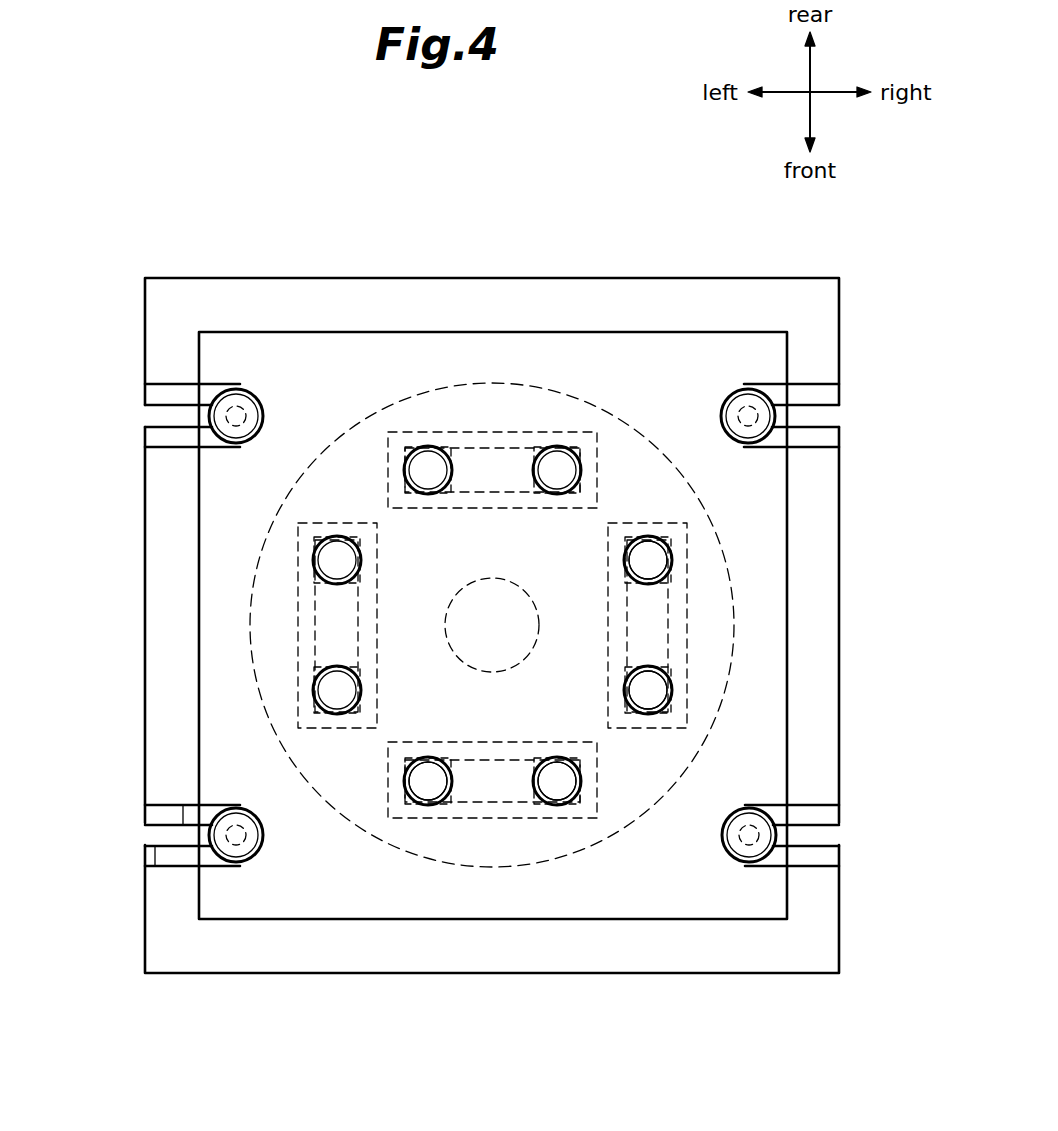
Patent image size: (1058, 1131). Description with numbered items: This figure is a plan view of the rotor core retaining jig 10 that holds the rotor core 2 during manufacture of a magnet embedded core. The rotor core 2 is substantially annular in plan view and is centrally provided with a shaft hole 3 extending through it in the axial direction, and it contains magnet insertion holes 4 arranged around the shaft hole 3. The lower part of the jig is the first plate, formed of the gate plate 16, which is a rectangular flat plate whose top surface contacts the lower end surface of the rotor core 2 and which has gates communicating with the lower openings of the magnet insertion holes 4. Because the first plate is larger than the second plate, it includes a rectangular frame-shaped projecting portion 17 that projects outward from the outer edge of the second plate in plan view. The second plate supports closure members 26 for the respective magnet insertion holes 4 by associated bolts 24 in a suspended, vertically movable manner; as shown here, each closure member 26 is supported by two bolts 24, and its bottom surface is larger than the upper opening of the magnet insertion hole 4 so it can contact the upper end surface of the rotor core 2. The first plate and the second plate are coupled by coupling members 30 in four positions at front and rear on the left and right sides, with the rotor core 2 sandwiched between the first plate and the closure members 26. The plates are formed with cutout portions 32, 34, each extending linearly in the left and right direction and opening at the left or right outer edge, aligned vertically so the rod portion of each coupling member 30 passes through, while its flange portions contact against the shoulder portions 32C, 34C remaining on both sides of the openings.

The rotor core 2 is at (687, 483).
The shaft hole 3 is at (455, 612).
The magnet insertion holes 4 is at (500, 448).
The rotor core retaining jig 10 is at (658, 257).
The gate plate 16 is at (826, 321).
The projecting portion 17 is at (825, 713).
The bolts 24 is at (640, 690).
The closure members 26 is at (485, 432).
The coupling members 30 is at (257, 409).
The cutout portions 32 is at (162, 417).
The shoulder portions 32C is at (183, 812).
The cutout portions 34 is at (228, 420).
The shoulder portions 34C is at (210, 815).